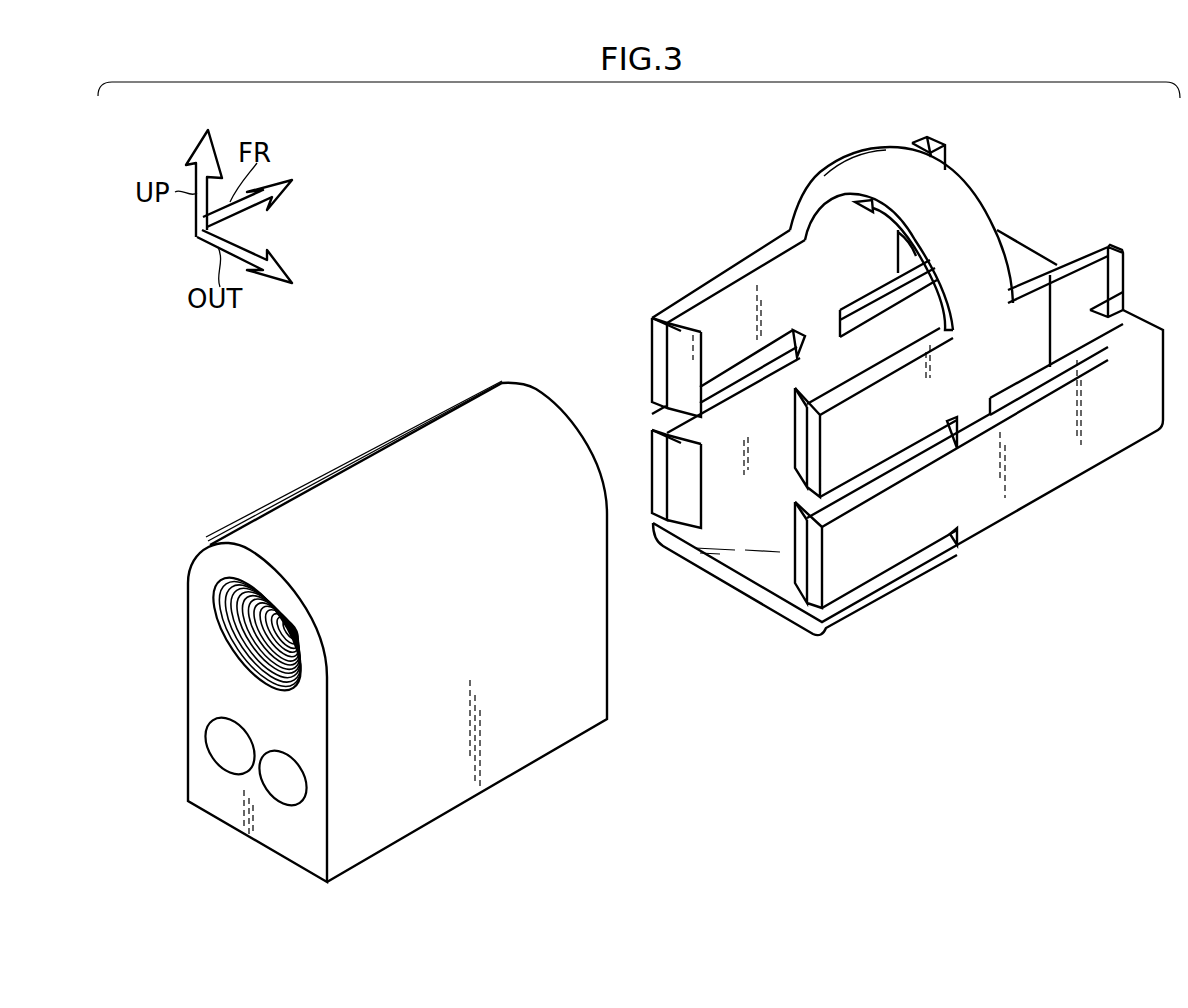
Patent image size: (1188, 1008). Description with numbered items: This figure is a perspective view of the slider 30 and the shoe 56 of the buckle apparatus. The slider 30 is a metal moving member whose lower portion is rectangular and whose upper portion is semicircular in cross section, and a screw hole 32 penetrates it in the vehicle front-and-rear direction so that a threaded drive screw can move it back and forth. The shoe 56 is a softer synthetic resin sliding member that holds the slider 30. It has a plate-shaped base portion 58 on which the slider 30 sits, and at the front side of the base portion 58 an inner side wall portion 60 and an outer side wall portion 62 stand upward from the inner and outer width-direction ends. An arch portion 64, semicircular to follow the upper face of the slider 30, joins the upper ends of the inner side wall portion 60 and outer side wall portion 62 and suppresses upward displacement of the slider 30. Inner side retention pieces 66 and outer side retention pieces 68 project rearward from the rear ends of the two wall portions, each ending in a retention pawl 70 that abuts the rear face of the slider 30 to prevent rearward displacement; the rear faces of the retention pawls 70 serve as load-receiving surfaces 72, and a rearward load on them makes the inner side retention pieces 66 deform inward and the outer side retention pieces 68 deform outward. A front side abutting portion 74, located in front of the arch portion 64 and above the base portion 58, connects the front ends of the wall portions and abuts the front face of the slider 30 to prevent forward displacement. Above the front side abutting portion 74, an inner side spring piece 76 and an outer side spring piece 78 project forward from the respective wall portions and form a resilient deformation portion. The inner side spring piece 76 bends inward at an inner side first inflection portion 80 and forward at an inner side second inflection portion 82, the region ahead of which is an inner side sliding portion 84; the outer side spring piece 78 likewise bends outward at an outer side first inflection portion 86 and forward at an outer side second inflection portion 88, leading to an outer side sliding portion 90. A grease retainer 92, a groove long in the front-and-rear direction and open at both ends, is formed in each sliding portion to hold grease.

The slider 30 is at (397, 458).
The screw hole 32 is at (240, 613).
The shoe 56 is at (1103, 167).
The base portion 58 is at (750, 565).
The inner side wall portion 60 is at (860, 370).
The outer side wall portion 62 is at (993, 490).
The arch portion 64 is at (962, 195).
The inner side retention pieces 66 is at (723, 307).
The outer side retention pieces 68 is at (885, 443).
The retention pawls 70 is at (693, 322).
The load-receiving surfaces 72 is at (690, 352).
The front side abutting portion 74 is at (1018, 270).
The inner side spring piece 76 is at (876, 253).
The outer side spring piece 78 is at (1015, 363).
The inner side first inflection portion 80 is at (932, 242).
The inner side second inflection portion 82 is at (917, 142).
The inner side sliding portion 84 is at (923, 135).
The outer side first inflection portion 86 is at (1062, 355).
The outer side second inflection portion 88 is at (1123, 362).
The outer side sliding portion 90 is at (1118, 270).
The grease retainer 92 is at (1130, 313).